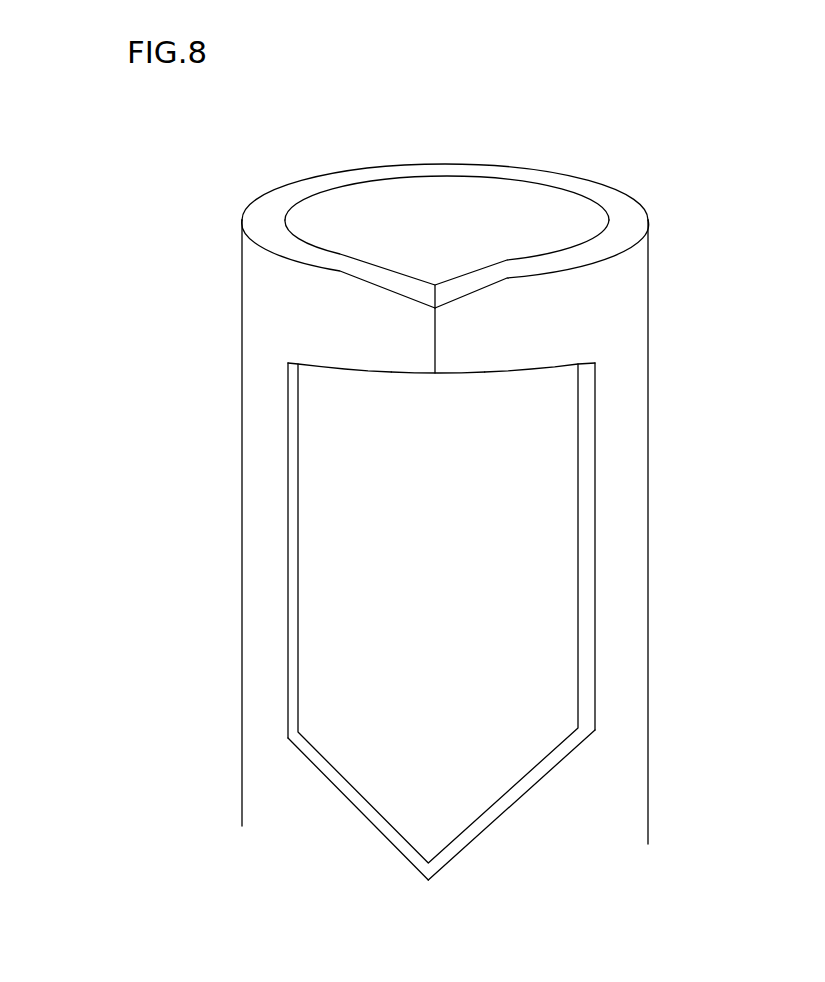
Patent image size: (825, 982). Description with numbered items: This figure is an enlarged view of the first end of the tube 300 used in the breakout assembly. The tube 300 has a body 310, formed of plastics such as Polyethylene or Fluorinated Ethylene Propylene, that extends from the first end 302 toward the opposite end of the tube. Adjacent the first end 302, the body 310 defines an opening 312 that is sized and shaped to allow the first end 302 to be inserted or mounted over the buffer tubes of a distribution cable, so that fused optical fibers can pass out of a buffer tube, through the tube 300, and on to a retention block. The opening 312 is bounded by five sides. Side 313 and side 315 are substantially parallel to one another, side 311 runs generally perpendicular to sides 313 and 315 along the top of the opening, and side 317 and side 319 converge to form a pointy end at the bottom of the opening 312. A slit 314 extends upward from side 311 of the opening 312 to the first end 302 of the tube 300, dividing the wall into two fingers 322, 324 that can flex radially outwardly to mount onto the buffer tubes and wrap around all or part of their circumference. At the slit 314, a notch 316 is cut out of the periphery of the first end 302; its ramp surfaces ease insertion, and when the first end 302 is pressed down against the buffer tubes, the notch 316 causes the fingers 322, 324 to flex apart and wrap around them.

The tube 300 is at (205, 241).
The first end 302 is at (459, 146).
The body 310 is at (632, 300).
The side 311 is at (450, 373).
The opening 312 is at (455, 598).
The side 313 is at (578, 532).
The slit 314 is at (437, 343).
The side 315 is at (298, 555).
The notch 316 is at (407, 283).
The side 317 is at (502, 793).
The side 319 is at (328, 760).
The finger 322 is at (390, 342).
The finger 324 is at (477, 350).